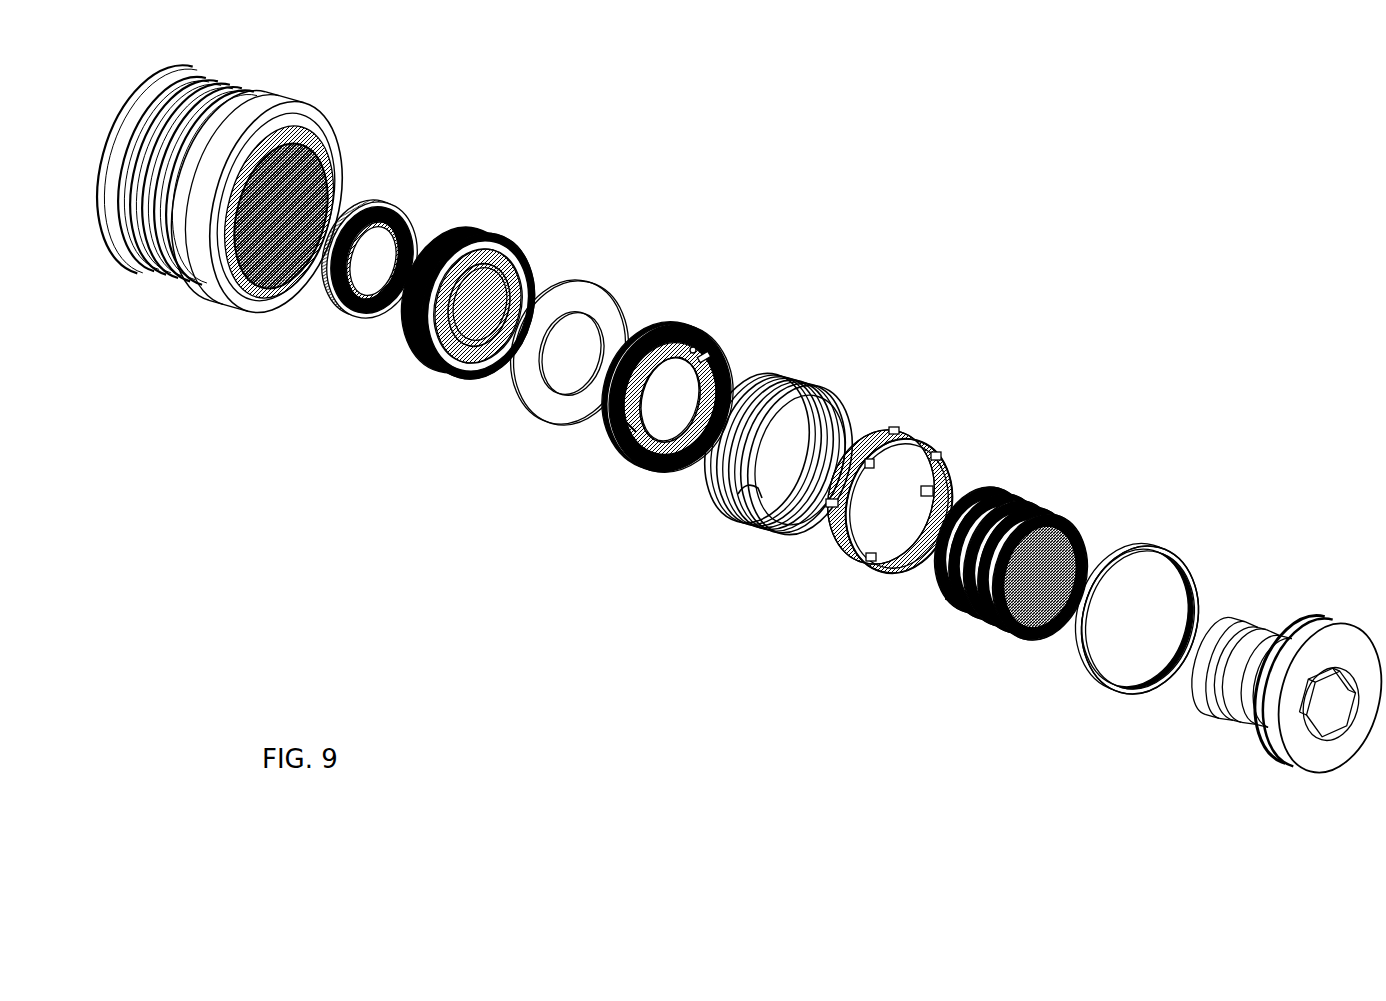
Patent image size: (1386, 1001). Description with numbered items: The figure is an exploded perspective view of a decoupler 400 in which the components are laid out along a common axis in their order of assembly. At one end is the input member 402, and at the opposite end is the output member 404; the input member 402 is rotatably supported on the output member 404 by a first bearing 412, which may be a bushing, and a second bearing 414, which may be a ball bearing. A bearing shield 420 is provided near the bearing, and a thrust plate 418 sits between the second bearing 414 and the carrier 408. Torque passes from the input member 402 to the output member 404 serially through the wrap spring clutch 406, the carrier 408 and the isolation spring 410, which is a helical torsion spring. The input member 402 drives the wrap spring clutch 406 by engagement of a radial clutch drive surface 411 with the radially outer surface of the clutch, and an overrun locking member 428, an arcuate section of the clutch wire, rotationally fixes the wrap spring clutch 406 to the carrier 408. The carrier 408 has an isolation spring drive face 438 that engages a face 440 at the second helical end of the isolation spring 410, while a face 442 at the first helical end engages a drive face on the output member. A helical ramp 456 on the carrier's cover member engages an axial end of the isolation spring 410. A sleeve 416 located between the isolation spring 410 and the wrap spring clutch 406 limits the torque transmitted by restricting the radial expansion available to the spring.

The decoupler 400 is at (905, 250).
The input member 402 is at (236, 92).
The output member 404 is at (1250, 627).
The wrap spring clutch 406 is at (787, 385).
The carrier 408 is at (690, 326).
The isolation spring 410 is at (1000, 538).
The clutch drive surface 411 is at (280, 237).
The first bearing 412 is at (1140, 546).
The second bearing 414 is at (485, 232).
The sleeve 416 is at (908, 432).
The thrust plate 418 is at (614, 296).
The bearing shield 420 is at (390, 207).
The overrun locking member 428 is at (747, 487).
The isolation spring drive face 438 is at (630, 420).
The face at second helical end of isolation spring 440 is at (947, 582).
The face at first helical end of isolation spring 442 is at (983, 590).
The helical ramp 456 is at (703, 359).